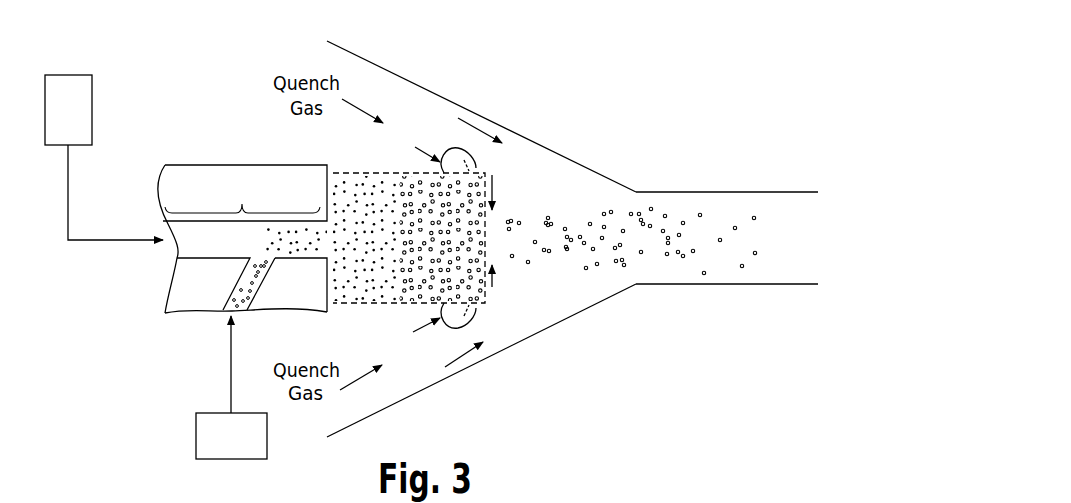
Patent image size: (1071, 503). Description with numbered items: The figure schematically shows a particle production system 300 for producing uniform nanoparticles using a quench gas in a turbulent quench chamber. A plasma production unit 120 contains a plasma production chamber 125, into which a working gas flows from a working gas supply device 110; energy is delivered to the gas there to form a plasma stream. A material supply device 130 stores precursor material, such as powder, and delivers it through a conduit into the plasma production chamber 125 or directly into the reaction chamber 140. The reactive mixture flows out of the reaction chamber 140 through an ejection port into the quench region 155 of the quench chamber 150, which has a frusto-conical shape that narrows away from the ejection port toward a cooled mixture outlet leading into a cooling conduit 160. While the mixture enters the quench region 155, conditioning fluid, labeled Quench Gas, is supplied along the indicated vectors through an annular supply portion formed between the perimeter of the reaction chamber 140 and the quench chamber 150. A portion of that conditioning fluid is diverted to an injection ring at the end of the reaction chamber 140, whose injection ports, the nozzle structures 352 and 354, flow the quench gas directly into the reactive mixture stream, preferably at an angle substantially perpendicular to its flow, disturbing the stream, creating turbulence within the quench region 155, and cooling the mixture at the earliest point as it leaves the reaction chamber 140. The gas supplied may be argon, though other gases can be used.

The working gas supply device 110 is at (69, 82).
The plasma production unit 120 is at (188, 178).
The plasma production chamber 125 is at (242, 195).
The material supply device 130 is at (204, 436).
The reaction chamber 140 is at (383, 305).
The quench chamber 150 is at (463, 104).
The quench region 155 is at (538, 320).
The cooling conduit 160 is at (700, 202).
The particle production system 300 is at (623, 83).
The nozzle structure 352 is at (474, 310).
The nozzle structure 354 is at (474, 166).